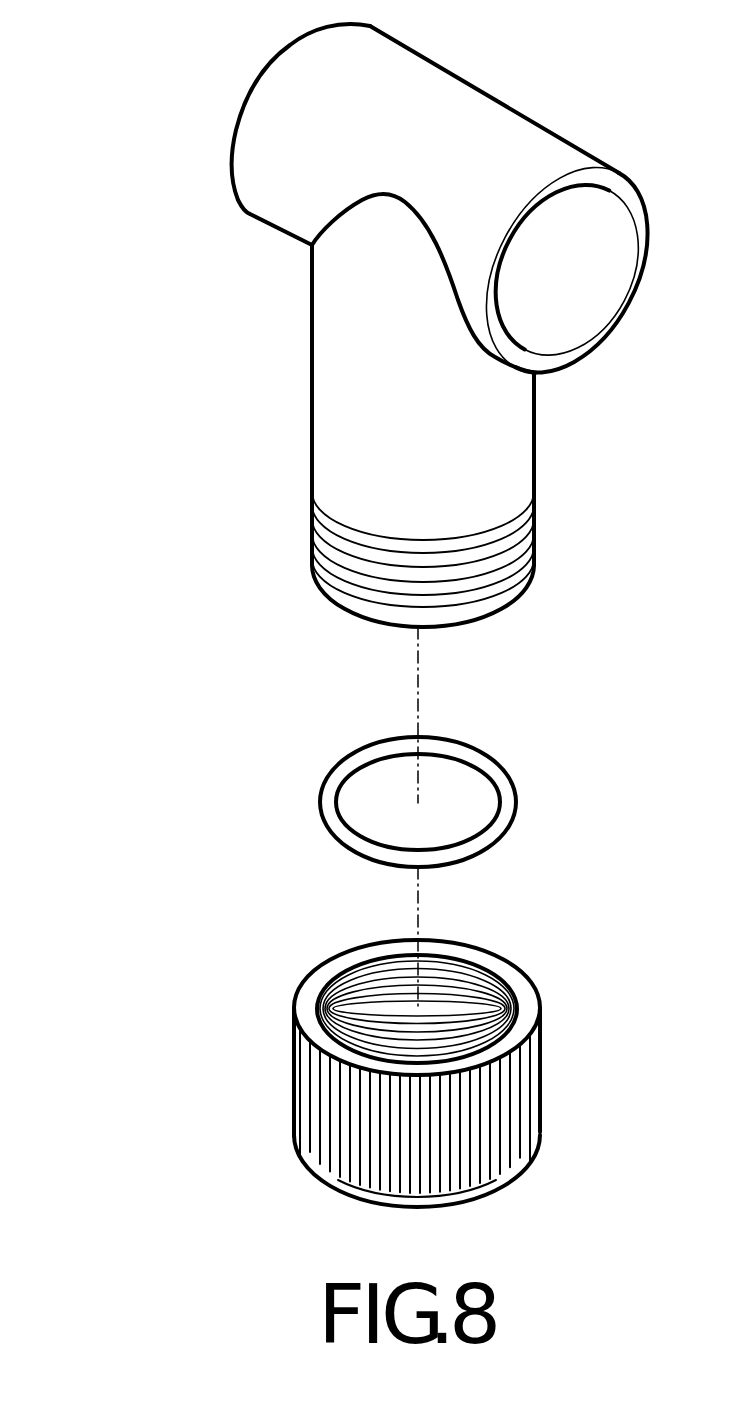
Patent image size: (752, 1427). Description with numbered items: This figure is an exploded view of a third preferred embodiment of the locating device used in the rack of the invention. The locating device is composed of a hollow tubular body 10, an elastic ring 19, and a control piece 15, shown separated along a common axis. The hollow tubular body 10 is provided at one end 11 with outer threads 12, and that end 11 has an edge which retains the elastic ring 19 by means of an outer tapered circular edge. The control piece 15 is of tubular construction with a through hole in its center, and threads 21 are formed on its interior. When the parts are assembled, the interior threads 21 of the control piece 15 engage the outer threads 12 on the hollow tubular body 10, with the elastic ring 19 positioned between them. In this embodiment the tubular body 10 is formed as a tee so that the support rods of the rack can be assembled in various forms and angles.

The hollow tubular body 10 is at (527, 453).
The end 11 is at (227, 571).
The outer threads 12 is at (537, 540).
The control piece 15 is at (538, 1067).
The elastic ring 19 is at (518, 802).
The threads 21 is at (483, 990).